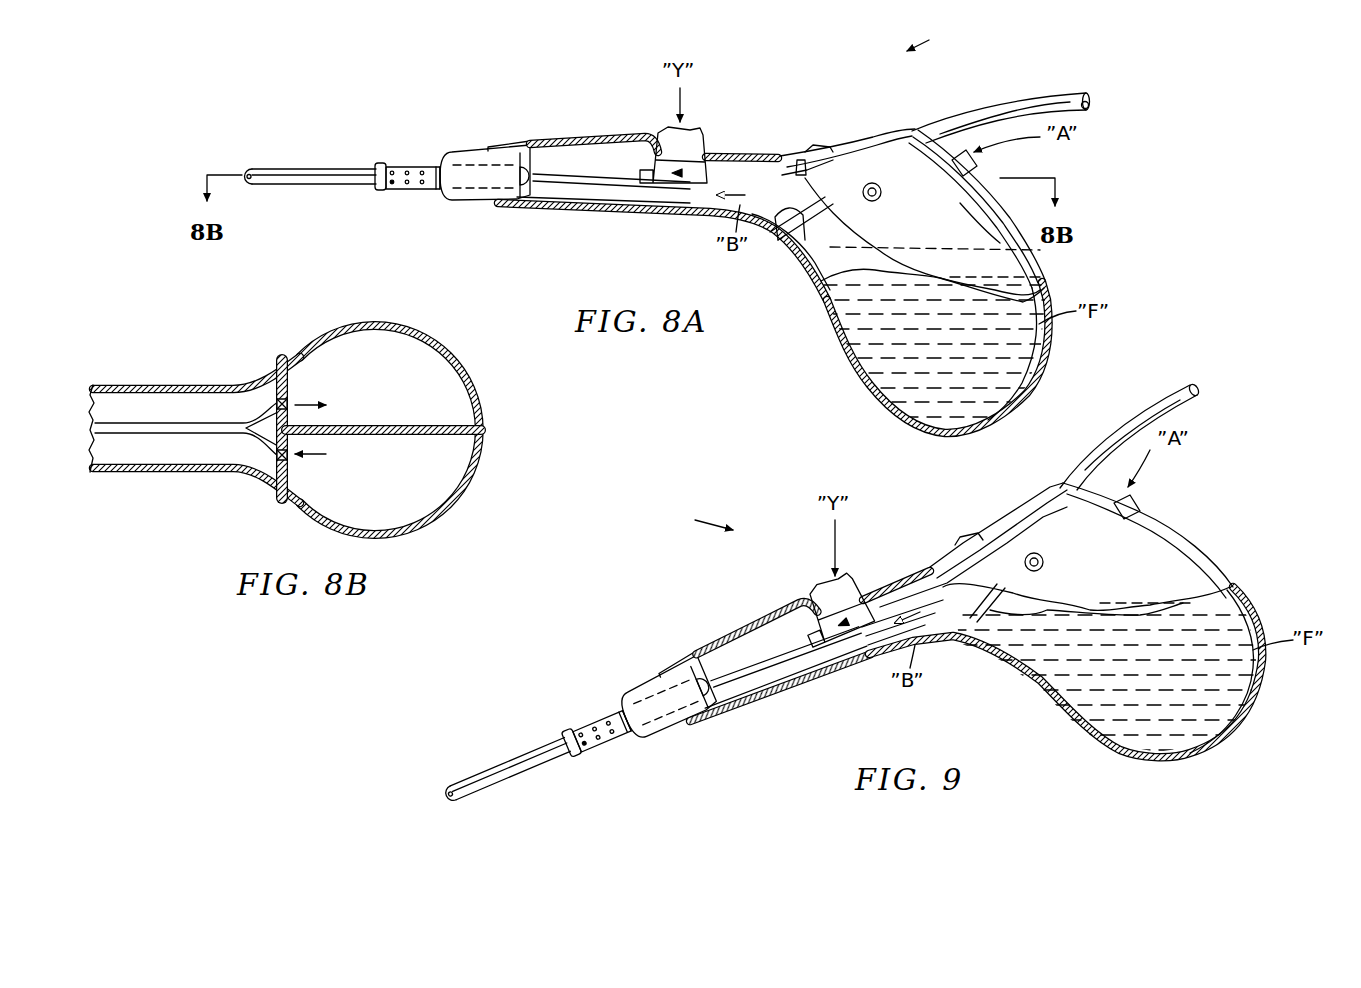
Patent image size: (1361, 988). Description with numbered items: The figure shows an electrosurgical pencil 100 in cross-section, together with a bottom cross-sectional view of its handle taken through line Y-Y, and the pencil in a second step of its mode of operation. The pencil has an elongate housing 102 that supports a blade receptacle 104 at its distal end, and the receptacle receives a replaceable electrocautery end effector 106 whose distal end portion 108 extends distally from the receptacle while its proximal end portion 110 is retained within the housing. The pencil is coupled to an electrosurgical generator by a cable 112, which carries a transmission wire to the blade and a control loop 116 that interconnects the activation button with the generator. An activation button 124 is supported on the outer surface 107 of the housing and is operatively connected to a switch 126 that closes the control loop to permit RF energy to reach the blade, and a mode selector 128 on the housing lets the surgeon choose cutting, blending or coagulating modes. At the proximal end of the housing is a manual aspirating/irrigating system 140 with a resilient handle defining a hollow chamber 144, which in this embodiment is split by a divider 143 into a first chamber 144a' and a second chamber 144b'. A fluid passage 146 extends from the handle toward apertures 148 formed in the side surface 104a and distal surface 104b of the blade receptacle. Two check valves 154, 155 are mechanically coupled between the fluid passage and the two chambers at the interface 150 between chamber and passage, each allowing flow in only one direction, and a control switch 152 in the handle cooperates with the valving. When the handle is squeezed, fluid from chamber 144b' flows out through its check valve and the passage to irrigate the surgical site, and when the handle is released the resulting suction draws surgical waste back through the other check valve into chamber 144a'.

In FIG. 8A, the electrosurgical pencil 100 is at (948, 31).
In FIG. 9, the electrosurgical pencil 100 is at (691, 511).
In FIG. 8A, the elongate housing 102 is at (578, 132).
In FIG. 9, the elongate housing 102 is at (745, 617).
In FIG. 8A, the blade receptacle 104 is at (404, 160).
In FIG. 9, the blade receptacle 104 is at (597, 719).
In FIG. 8A, the side surface of blade receptacle 104a is at (440, 167).
In FIG. 9, the side surface of blade receptacle 104a is at (616, 710).
In FIG. 8A, the distal surface of blade receptacle 104b is at (375, 168).
In FIG. 9, the distal surface of blade receptacle 104b is at (565, 740).
In FIG. 8A, the electrocautery end effector 106 is at (280, 160).
In FIG. 9, the electrocautery end effector 106 is at (455, 781).
In FIG. 8A, the outer surface of housing 107 is at (490, 150).
In FIG. 9, the outer surface of housing 107 is at (670, 675).
In FIG. 8A, the distal end portion of blade 108 is at (252, 186).
In FIG. 9, the distal end portion of blade 108 is at (450, 802).
In FIG. 8A, the proximal end portion of blade 110 is at (519, 185).
In FIG. 9, the proximal end portion of blade 110 is at (715, 716).
In FIG. 8A, the cable 112 is at (1044, 98).
In FIG. 9, the cable 112 is at (1182, 380).
In FIG. 8A, the control loop 116 is at (748, 160).
In FIG. 9, the control loop 116 is at (878, 592).
In FIG. 8A, the activation button 124 is at (692, 128).
In FIG. 9, the activation button 124 is at (822, 602).
In FIG. 8A, the switch 126 is at (660, 178).
In FIG. 9, the switch 126 is at (830, 636).
In FIG. 8A, the mode selector 128 is at (823, 140).
In FIG. 9, the mode selector 128 is at (964, 534).
In FIG. 8A, the manual aspirating/irrigating system 140 is at (1053, 278).
In FIG. 8B, the manual aspirating/irrigating system 140 is at (283, 510).
In FIG. 9, the manual aspirating/irrigating system 140 is at (1236, 553).
In FIG. 8B, the divider 143 is at (425, 425).
In FIG. 9, the hollow chamber 144 is at (1233, 697).
In FIG. 8A, the first chamber 144a' is at (922, 235).
In FIG. 8B, the first chamber 144a' is at (426, 380).
In FIG. 8A, the second chamber 144b' is at (963, 343).
In FIG. 8B, the second chamber 144b' is at (428, 477).
In FIG. 8A, the fluid passage 146 is at (575, 206).
In FIG. 8B, the fluid passage 146 is at (176, 425).
In FIG. 9, the fluid passage 146 is at (768, 698).
In FIG. 8A, the apertures 148 is at (393, 185).
In FIG. 9, the apertures 148 is at (590, 750).
In FIG. 8A, the interface 150 is at (800, 240).
In FIG. 9, the interface 150 is at (1015, 600).
In FIG. 8A, the control switch 152 is at (988, 167).
In FIG. 9, the control switch 152 is at (1140, 502).
In FIG. 8A, the check valve 154 is at (750, 220).
In FIG. 8B, the check valve 154 is at (290, 456).
In FIG. 9, the check valve 154 is at (945, 642).
In FIG. 8A, the check valve 155 is at (800, 160).
In FIG. 8B, the check valve 155 is at (290, 404).